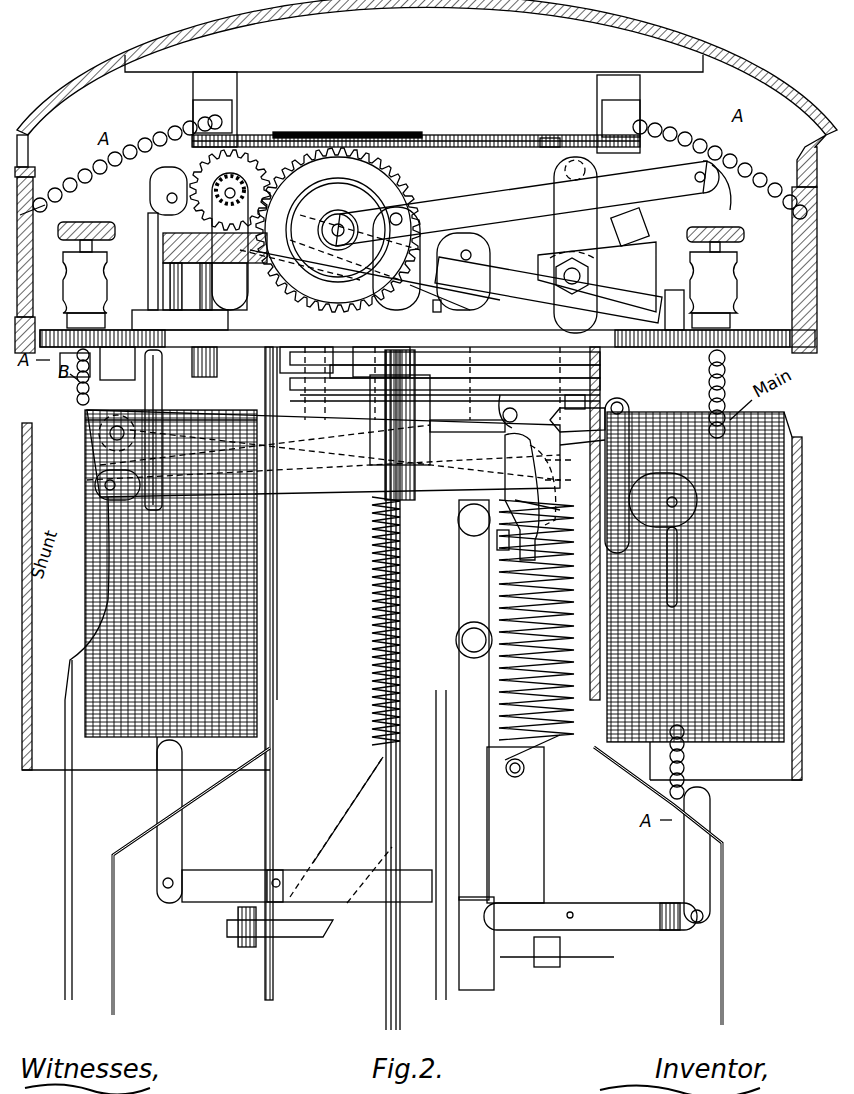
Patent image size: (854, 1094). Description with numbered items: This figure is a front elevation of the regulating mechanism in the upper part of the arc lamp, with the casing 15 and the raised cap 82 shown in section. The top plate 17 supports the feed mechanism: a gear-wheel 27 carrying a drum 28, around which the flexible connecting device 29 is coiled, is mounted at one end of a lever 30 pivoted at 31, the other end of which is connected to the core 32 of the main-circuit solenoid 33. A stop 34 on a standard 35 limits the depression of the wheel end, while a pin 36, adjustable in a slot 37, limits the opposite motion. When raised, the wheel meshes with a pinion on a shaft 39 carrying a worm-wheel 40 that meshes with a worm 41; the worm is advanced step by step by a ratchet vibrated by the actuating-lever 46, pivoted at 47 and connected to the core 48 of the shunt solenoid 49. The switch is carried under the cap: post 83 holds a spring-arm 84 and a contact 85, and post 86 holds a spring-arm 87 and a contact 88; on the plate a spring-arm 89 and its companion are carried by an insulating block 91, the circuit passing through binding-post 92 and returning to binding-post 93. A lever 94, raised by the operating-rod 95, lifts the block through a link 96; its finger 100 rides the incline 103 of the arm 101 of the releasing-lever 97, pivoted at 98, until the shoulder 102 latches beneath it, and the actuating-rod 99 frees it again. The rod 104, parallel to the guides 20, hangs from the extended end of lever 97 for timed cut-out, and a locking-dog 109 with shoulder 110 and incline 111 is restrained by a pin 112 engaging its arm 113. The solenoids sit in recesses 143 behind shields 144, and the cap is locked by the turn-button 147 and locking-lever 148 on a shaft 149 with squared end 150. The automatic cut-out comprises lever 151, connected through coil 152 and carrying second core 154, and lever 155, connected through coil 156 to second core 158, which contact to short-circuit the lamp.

The casing 15 is at (729, 913).
The top plate 17 is at (650, 334).
The vertical guides 20 is at (402, 850).
The wheel 27 is at (380, 176).
The drum 28 is at (353, 230).
The flexible connecting device 29 is at (268, 578).
The lever 30 is at (527, 203).
The pivot 31 is at (396, 258).
The core 32 is at (712, 208).
The solenoid 33 is at (780, 427).
The stop 34 is at (562, 168).
The standard 35 is at (575, 245).
The pin 36 is at (590, 283).
The slot 37 is at (572, 257).
The shaft 39 is at (230, 190).
The worm-wheel 40 is at (240, 146).
The worm 41 is at (205, 286).
The actuating-lever 46 is at (152, 198).
The pivot 47 is at (467, 258).
The core 48 is at (155, 224).
The solenoid 49 is at (83, 425).
The cap 82 is at (136, 44).
The block or post 83 is at (603, 133).
The spring-arm 84 is at (505, 142).
The contact 85 is at (550, 140).
The post 86 is at (238, 114).
The spring-arm 87 is at (303, 132).
The contact 88 is at (255, 162).
The spring-arm 89 is at (255, 308).
The block 91 is at (312, 323).
The binding-post 92 is at (722, 230).
The binding-post 93 is at (92, 221).
The lever 94 is at (320, 470).
The operating-rod 95 is at (677, 560).
The link 96 is at (380, 407).
The releasing-lever 97 is at (322, 460).
The pivot 98 is at (504, 414).
The actuating-rod 99 is at (72, 853).
The finger 100 is at (502, 546).
The arm 101 is at (505, 466).
The shoulder 102 is at (510, 487).
The incline 103 is at (518, 509).
The rod 104 is at (630, 448).
The locking-dog 109 is at (568, 447).
The shoulder 110 is at (560, 486).
The incline 111 is at (558, 472).
The pin 112 is at (570, 402).
The arm 113 is at (590, 410).
The recesses or bays 143 is at (412, 606).
The shields 144 is at (30, 608).
The locking turn-button 147 is at (445, 356).
The locking-lever 148 is at (492, 360).
The shaft 149 is at (438, 306).
The squared end 150 is at (447, 427).
The lever 151 is at (600, 907).
The coil 152 is at (570, 626).
The second core 154 is at (703, 791).
The lever 155 is at (364, 900).
The coil 156 is at (375, 680).
The second core 158 is at (183, 772).